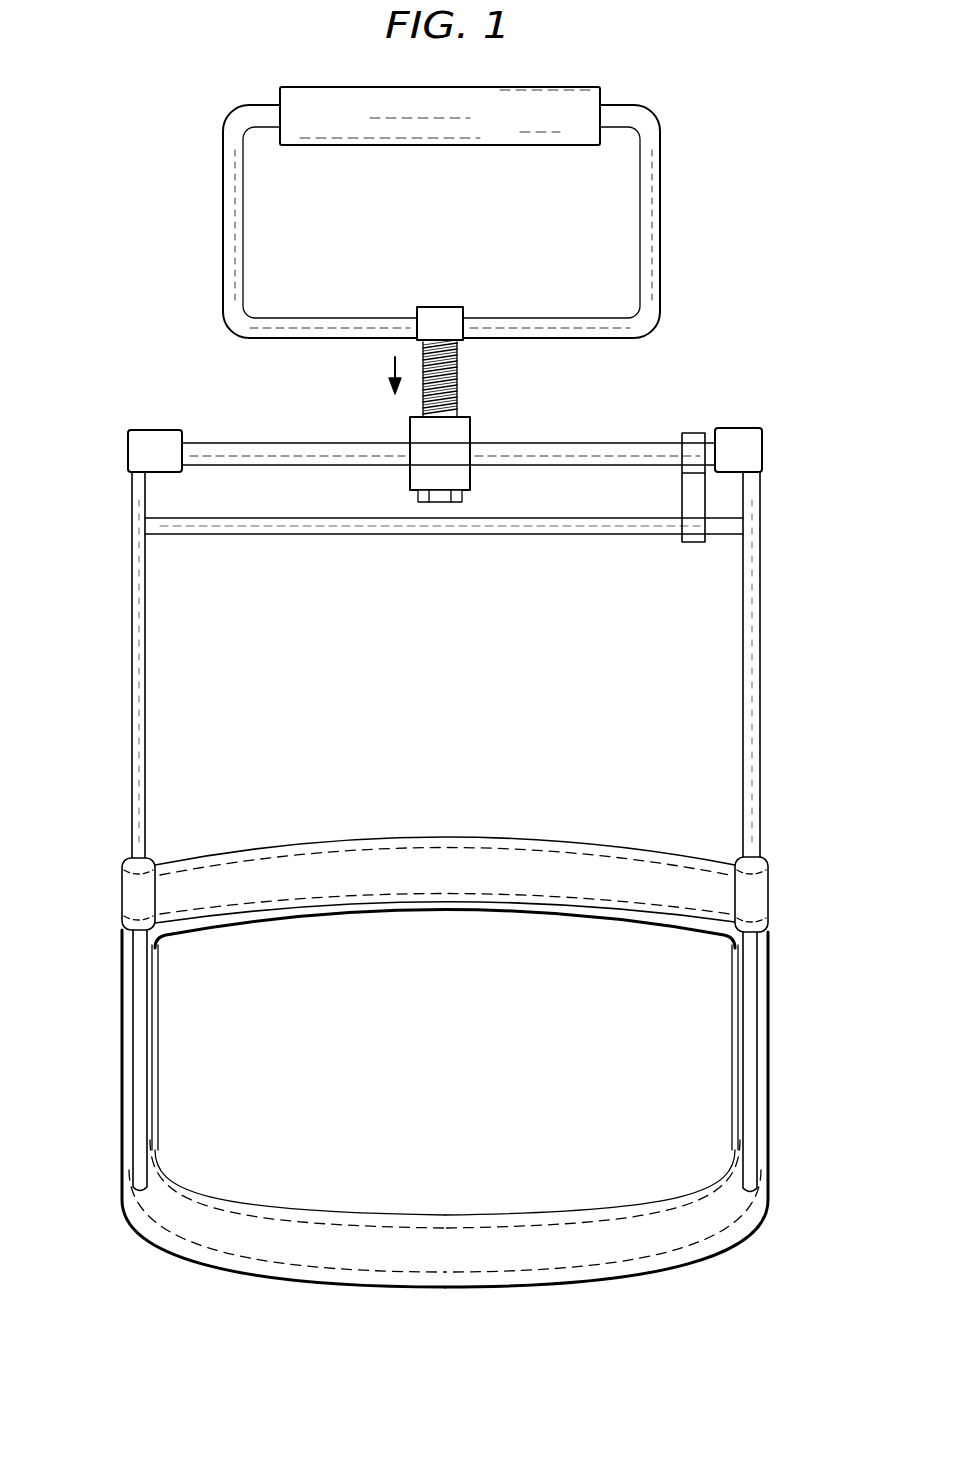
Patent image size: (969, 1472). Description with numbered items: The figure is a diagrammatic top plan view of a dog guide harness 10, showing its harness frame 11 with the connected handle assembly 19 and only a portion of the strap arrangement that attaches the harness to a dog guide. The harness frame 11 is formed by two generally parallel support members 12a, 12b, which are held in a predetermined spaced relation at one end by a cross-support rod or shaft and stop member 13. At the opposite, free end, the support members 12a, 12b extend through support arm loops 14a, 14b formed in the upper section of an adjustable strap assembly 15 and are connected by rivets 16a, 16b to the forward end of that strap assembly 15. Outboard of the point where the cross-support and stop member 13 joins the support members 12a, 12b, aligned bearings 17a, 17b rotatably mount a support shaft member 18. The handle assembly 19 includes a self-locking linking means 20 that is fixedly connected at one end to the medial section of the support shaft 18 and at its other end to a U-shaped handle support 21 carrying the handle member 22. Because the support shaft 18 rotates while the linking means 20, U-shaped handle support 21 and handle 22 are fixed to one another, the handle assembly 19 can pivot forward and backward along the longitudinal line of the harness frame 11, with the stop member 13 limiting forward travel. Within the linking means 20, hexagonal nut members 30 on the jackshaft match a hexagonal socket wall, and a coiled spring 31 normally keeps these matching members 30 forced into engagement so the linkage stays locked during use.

The dog guide harness 10 is at (755, 363).
The harness frame 11 is at (760, 708).
The support member 12a is at (750, 598).
The support member 12b is at (147, 719).
The cross-support rod or shaft and stop member 13 is at (262, 535).
The support arm loop 14a is at (762, 937).
The support arm loop 14b is at (124, 937).
The adjustable strap assembly 15 is at (452, 912).
The rivet 16a is at (768, 1174).
The rivet 16b is at (124, 1174).
The bearing 17a is at (740, 446).
The bearing 17b is at (138, 458).
The support shaft member 18 is at (245, 441).
The handle assembly 19 is at (661, 217).
The self-locking linking means 20 is at (470, 427).
The U-shaped handle support 21 is at (585, 326).
The handle member 22 is at (513, 128).
The hexagonal nut members 30 is at (455, 501).
The resilient member or coiled spring 31 is at (455, 381).